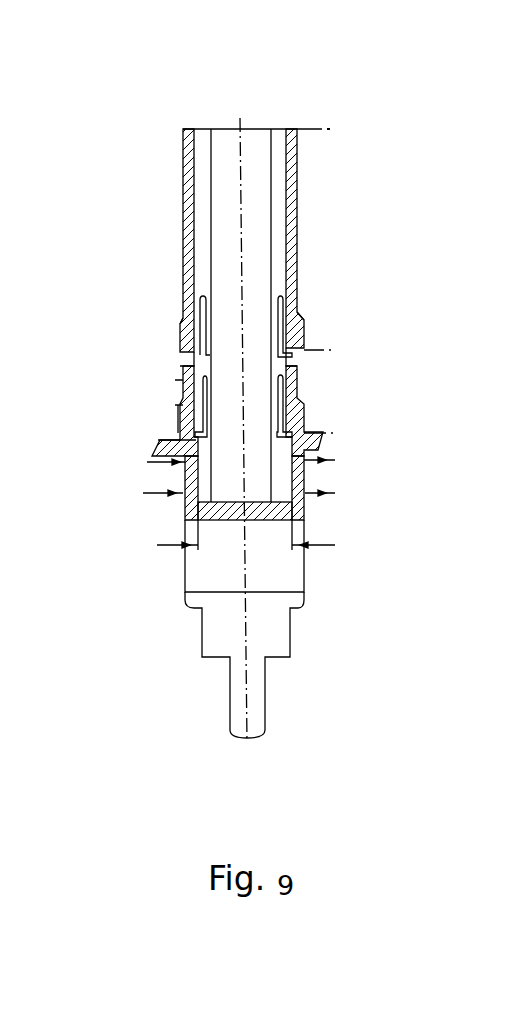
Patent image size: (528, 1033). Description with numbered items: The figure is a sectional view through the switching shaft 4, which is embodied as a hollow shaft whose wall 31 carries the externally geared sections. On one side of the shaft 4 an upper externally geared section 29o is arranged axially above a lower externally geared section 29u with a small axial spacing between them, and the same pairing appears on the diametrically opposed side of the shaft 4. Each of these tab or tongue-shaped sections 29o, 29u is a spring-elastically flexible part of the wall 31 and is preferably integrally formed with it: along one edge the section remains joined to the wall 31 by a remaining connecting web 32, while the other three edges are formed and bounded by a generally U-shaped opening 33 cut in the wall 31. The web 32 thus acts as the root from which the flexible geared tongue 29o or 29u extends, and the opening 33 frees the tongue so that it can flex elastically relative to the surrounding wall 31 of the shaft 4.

The switching shaft 4 is at (240, 128).
The wall 31 is at (283, 247).
The generally U-shaped opening 33 is at (288, 308).
The upper externally geared section 29o is at (303, 347).
The connecting web 32 is at (295, 375).
The lower externally geared section 29u is at (303, 420).